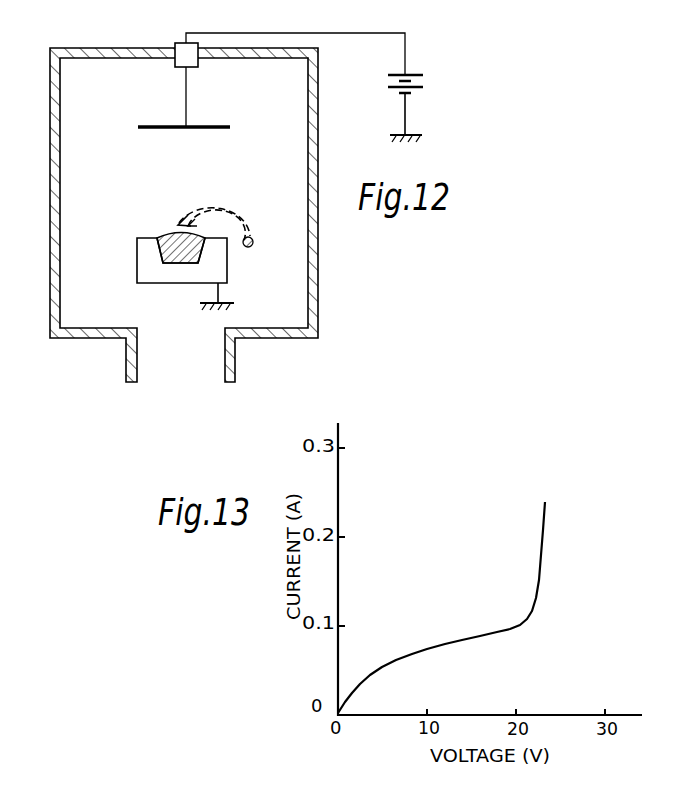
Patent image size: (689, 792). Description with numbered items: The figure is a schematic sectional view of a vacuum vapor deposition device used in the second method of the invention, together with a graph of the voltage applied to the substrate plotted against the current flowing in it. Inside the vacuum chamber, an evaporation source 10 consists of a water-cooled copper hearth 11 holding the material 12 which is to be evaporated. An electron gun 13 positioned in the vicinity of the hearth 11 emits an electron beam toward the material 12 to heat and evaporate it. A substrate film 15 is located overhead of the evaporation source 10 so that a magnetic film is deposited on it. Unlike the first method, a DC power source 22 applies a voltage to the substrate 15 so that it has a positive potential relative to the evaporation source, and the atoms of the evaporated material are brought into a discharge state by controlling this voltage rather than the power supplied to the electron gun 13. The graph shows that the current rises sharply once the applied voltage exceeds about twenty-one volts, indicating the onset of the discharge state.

The evaporation source 10 is at (133, 301).
The water-cooled copper hearth 11 is at (162, 283).
The material 12 is at (173, 236).
The electron gun 13 is at (250, 249).
The substrate film 15 is at (154, 124).
The DC power source 22 is at (424, 90).